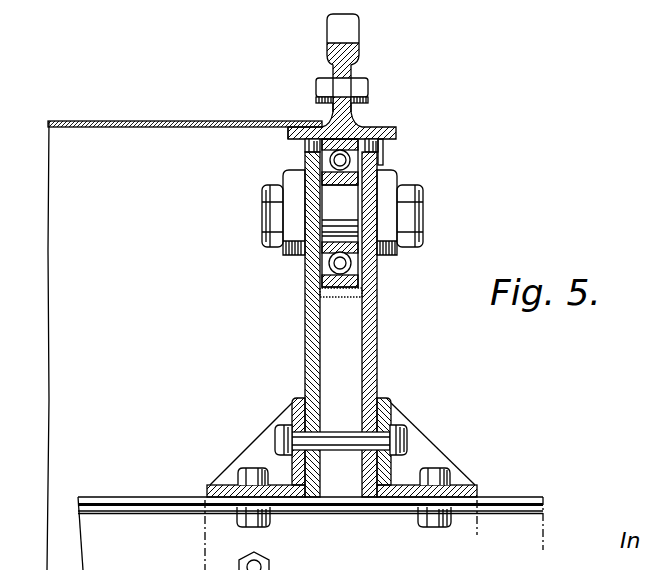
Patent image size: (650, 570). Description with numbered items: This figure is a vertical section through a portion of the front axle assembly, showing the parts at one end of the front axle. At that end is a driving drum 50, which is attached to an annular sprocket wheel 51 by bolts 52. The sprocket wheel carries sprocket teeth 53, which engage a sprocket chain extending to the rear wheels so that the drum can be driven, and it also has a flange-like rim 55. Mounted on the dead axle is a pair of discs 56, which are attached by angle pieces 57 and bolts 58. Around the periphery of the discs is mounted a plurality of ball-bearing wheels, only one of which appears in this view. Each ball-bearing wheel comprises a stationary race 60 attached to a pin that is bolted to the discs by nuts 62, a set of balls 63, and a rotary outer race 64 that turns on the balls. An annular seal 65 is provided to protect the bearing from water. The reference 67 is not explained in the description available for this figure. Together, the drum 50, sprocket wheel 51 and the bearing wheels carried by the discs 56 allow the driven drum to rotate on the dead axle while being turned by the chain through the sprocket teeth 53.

The driving drum 50 is at (180, 121).
The annular sprocket wheel 51 is at (357, 110).
The bolts 52 is at (317, 87).
The sprocket teeth 53 is at (349, 27).
The flange-like rim 55 is at (371, 126).
The discs 56 is at (313, 386).
The angle pieces 57 is at (420, 442).
The bolts 58 is at (252, 468).
The stationary race 60 is at (362, 178).
The nuts 62 is at (425, 201).
The balls 63 is at (328, 161).
The rotary outer race 64 is at (289, 131).
The annular seal 65 is at (372, 146).
The pin 67 is at (348, 224).